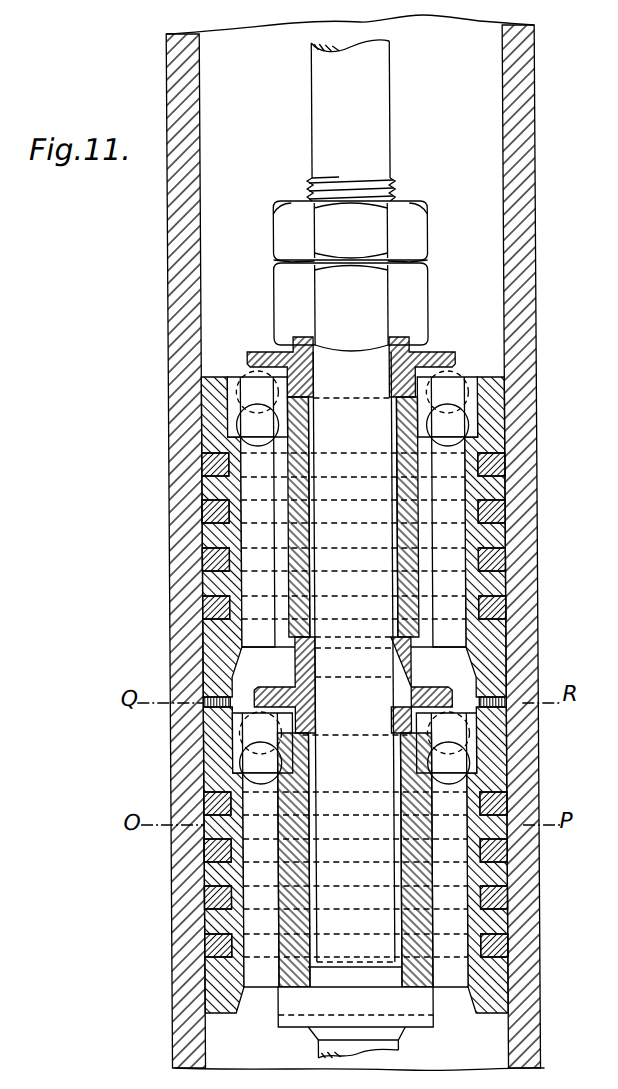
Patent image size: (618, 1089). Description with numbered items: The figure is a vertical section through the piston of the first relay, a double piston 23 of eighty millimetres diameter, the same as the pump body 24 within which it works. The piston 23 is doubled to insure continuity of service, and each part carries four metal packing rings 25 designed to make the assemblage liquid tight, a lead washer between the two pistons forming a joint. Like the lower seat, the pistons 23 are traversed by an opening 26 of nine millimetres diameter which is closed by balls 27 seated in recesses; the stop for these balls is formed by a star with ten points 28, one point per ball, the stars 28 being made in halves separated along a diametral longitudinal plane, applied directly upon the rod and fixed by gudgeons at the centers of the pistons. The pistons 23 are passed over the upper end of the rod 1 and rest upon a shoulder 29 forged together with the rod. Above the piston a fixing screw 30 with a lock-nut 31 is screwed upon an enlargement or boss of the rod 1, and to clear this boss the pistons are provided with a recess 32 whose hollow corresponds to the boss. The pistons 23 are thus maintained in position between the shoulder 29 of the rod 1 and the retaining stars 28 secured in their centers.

The rod 1 is at (402, 1048).
The double piston 23 is at (210, 639).
The pump body 24 is at (528, 188).
The metal packing rings 25 is at (212, 560).
The opening 26 is at (354, 692).
The balls 27 is at (353, 577).
The star with ten points 28 is at (259, 352).
The shoulder 29 is at (355, 1007).
The fixing screw 30 is at (351, 305).
The lock-nut 31 is at (350, 230).
The recess 32 is at (392, 495).